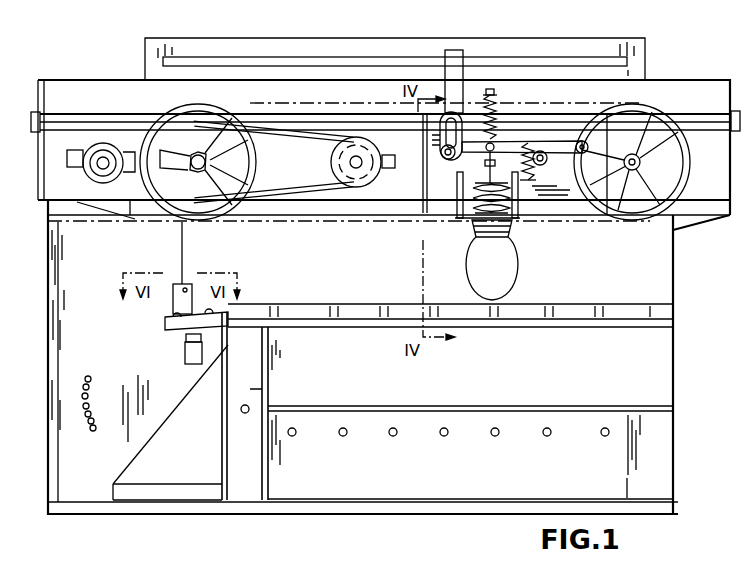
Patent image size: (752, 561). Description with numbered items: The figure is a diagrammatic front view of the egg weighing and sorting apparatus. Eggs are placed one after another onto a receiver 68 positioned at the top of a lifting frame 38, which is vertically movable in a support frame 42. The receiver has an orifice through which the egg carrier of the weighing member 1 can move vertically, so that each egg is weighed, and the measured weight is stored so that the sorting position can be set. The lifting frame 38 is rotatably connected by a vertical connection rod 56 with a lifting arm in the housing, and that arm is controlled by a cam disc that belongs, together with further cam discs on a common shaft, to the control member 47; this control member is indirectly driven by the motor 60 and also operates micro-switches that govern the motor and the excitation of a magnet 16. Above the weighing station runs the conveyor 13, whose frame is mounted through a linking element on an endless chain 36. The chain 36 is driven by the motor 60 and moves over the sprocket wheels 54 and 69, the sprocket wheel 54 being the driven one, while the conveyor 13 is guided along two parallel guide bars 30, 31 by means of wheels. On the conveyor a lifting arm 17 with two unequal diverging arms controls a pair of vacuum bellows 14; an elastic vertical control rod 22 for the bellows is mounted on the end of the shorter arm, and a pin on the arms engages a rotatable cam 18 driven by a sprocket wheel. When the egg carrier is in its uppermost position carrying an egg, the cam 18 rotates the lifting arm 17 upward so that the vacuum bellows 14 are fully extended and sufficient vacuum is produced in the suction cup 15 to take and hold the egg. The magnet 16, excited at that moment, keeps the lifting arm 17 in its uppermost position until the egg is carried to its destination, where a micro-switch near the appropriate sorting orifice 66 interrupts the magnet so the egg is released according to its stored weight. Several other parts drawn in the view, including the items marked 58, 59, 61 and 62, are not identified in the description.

The weighing member 1 is at (95, 451).
The conveyor 13 is at (552, 130).
The vacuum bellows 14 is at (500, 212).
The suction cup 15 is at (483, 250).
The magnet 16 is at (448, 159).
The lifting arm 17 is at (503, 141).
The cam 18 is at (545, 165).
The control rod 22 is at (495, 88).
The guide bar 30 is at (63, 120).
The guide bar 31 is at (70, 216).
The endless chain 36 is at (302, 222).
The lifting frame 38 is at (250, 347).
The support frame 42 is at (162, 465).
The control member 47 is at (104, 157).
The sprocket wheel 54 is at (200, 110).
The connection rod 56 is at (182, 234).
The belt 58 is at (287, 133).
The shaft 59 is at (357, 168).
The motor 60 is at (340, 140).
The pulley bracket 61 is at (374, 137).
The bracket 62 is at (135, 213).
The sorting orifice 66 is at (546, 312).
The receiver 68 is at (165, 319).
The sprocket wheel 69 is at (670, 207).